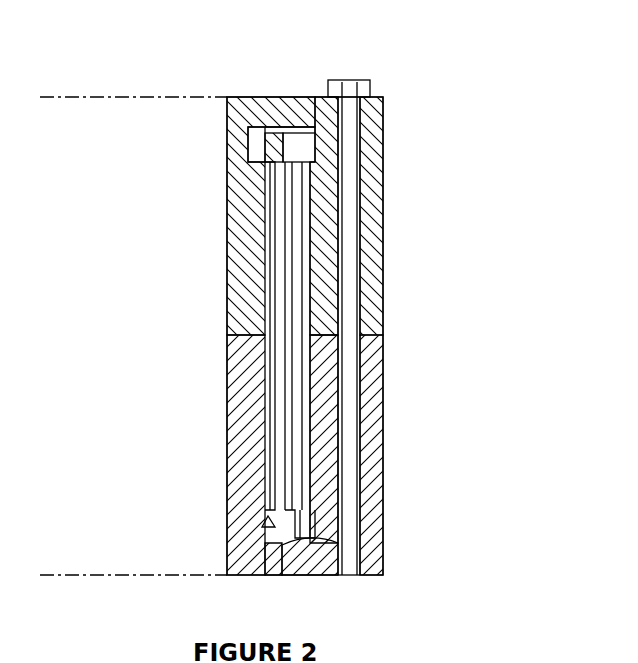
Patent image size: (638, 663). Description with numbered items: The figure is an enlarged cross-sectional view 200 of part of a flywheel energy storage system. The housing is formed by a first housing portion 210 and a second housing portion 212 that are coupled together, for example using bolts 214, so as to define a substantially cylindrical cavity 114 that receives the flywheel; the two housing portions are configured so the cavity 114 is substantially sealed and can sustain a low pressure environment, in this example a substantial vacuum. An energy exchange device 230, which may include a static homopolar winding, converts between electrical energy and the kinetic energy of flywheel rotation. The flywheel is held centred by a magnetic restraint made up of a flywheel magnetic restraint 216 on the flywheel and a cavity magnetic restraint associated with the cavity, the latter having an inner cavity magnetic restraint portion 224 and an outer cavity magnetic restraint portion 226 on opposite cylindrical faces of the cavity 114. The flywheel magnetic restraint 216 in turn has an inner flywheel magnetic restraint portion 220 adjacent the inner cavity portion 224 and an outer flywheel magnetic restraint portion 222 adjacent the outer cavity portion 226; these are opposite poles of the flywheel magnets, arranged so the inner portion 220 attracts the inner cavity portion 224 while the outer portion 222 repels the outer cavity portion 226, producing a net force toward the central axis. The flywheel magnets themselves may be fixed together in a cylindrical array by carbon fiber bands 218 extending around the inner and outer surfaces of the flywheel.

The enlarged view 200 is at (442, 144).
The first housing portion 210 is at (368, 232).
The second housing portion 212 is at (378, 395).
The bolts 214 is at (348, 84).
The flywheel magnetic restraint 216 is at (283, 543).
The carbon fiber bands 218 is at (307, 137).
The inner flywheel magnetic restraint portion 220 is at (262, 532).
The outer flywheel magnetic restraint portion 222 is at (317, 538).
The inner cavity magnetic restraint portion 224 is at (270, 473).
The outer cavity magnetic restraint portion 226 is at (310, 467).
The energy exchange device 230 is at (257, 137).
The cavity 114 is at (264, 527).